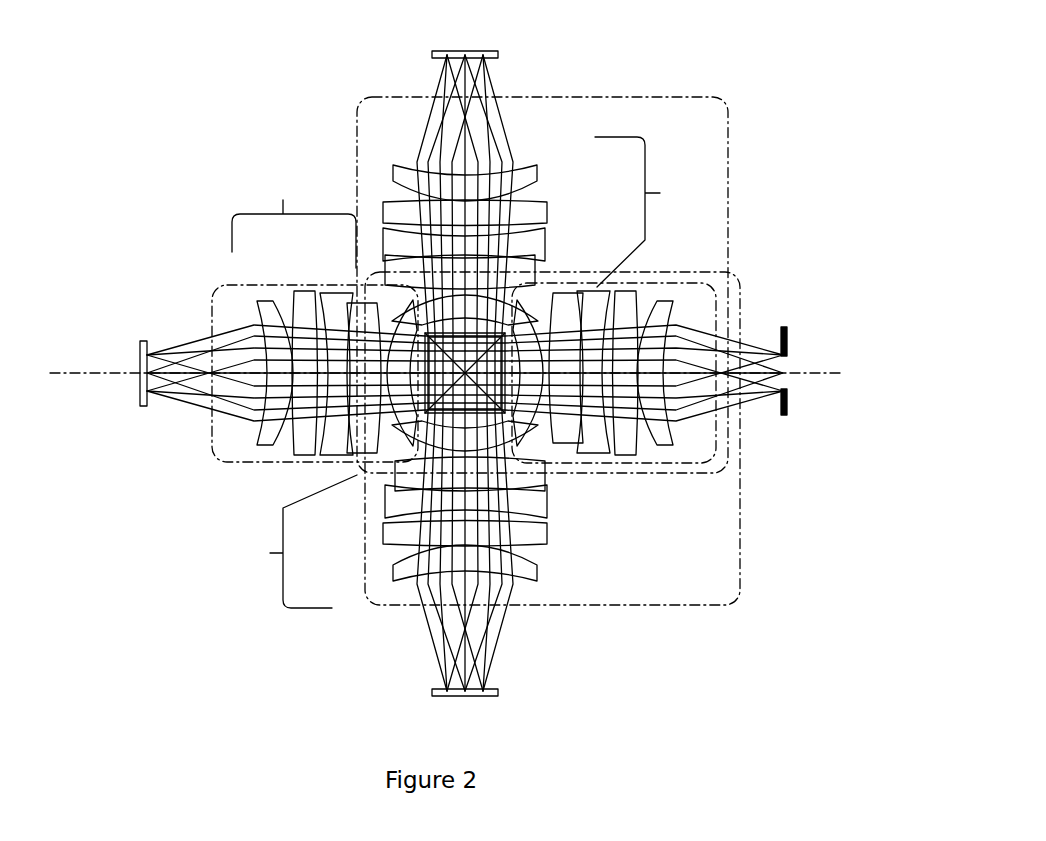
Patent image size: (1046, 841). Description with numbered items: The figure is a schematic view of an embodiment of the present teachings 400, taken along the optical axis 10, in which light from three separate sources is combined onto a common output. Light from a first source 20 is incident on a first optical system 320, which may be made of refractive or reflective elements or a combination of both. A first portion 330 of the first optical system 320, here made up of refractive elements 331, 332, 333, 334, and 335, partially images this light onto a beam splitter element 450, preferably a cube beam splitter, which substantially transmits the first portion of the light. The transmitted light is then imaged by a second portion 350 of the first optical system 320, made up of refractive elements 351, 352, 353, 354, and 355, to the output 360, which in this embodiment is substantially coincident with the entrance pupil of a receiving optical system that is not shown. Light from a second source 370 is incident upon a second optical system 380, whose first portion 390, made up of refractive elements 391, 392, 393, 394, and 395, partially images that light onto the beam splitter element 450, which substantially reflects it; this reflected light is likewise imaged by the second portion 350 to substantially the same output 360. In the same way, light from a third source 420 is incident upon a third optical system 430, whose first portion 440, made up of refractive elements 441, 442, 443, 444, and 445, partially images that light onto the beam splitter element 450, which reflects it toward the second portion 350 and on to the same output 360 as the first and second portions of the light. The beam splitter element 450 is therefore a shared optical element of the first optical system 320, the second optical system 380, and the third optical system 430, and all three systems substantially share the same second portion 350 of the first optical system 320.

The embodiment of the present teachings 400 is at (128, 250).
The optical axis 10 is at (88, 375).
The first source 20 is at (144, 410).
The first optical system 320 is at (212, 312).
The first portion of the first optical system 330 is at (294, 221).
The refractive element 331 is at (262, 305).
The refractive element 332 is at (300, 298).
The refractive element 333 is at (340, 310).
The refractive element 334 is at (365, 305).
The refractive element 335 is at (393, 318).
The second portion of the first optical system 350 is at (555, 473).
The refractive element 351 is at (672, 462).
The refractive element 352 is at (640, 462).
The refractive element 353 is at (603, 455).
The refractive element 354 is at (575, 470).
The refractive element 355 is at (557, 455).
The output 360 is at (784, 416).
The second source 370 is at (497, 55).
The second optical system 380 is at (622, 97).
The first portion of the second optical system 390 is at (647, 212).
The refractive element 391 is at (535, 167).
The refractive element 392 is at (545, 207).
The refractive element 393 is at (545, 247).
The refractive element 394 is at (540, 272).
The refractive element 395 is at (525, 300).
The third source 420 is at (497, 692).
The third optical system 430 is at (657, 605).
The first portion of the third optical system 440 is at (293, 541).
The refractive element 441 is at (395, 585).
The refractive element 442 is at (370, 560).
The refractive element 443 is at (380, 525).
The refractive element 444 is at (372, 505).
The refractive element 445 is at (392, 472).
The beam splitter element 450 is at (305, 460).